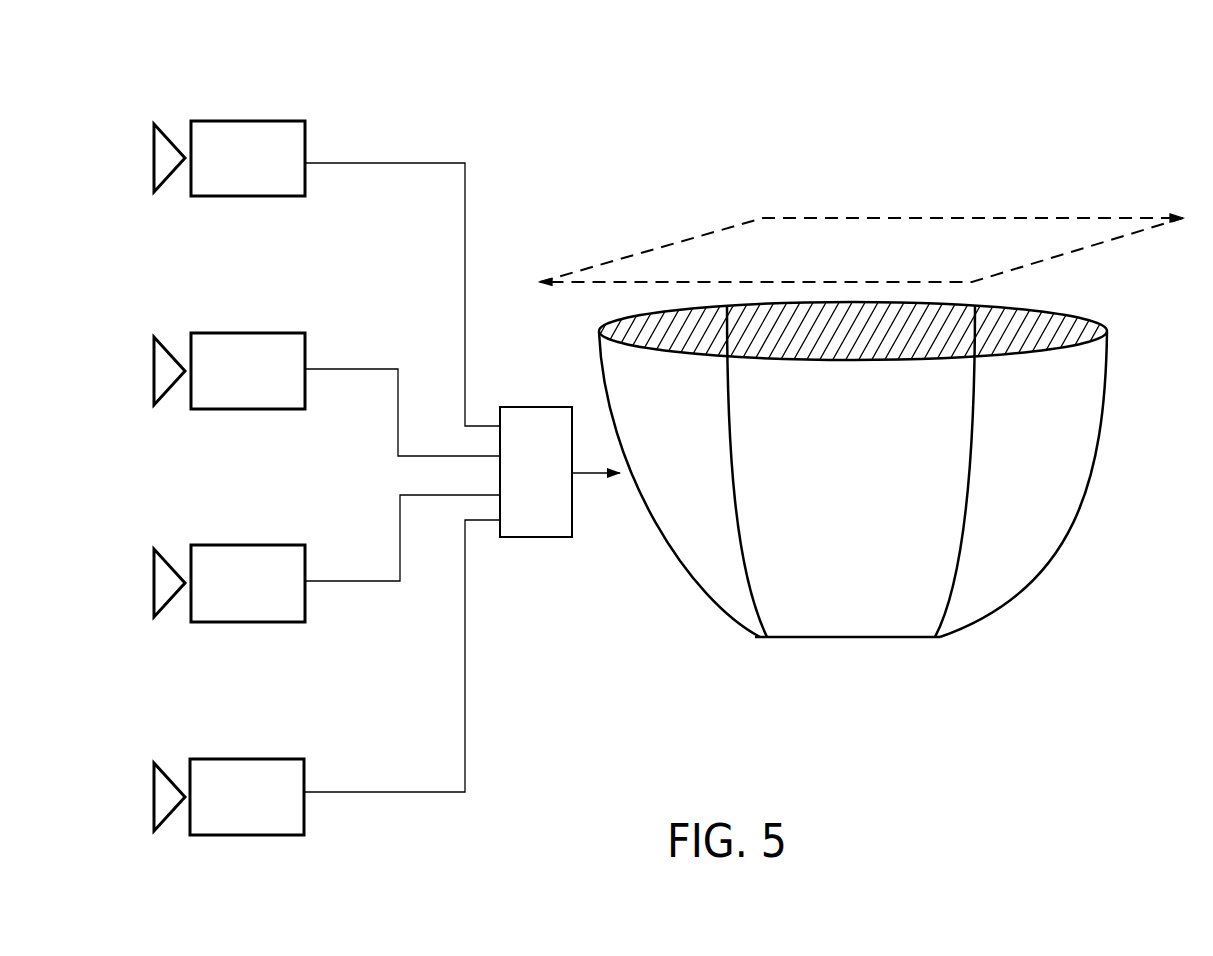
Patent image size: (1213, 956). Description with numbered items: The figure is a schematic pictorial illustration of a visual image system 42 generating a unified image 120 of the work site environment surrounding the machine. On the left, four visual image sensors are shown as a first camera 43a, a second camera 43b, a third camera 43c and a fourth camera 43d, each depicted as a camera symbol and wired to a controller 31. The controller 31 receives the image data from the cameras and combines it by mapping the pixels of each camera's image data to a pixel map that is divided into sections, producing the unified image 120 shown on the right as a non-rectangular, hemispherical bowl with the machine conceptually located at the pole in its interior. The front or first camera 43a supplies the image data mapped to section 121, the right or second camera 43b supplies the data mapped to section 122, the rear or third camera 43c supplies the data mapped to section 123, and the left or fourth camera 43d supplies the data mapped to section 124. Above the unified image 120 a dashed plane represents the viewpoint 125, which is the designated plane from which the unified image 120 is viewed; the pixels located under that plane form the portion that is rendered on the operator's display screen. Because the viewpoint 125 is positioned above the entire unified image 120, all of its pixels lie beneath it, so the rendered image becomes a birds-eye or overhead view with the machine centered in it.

The visual image system 42 is at (430, 118).
The first camera 43a is at (212, 121).
The second camera 43b is at (212, 333).
The third camera 43c is at (212, 545).
The fourth camera 43d is at (210, 759).
The controller 31 is at (548, 477).
The viewpoint 125 is at (807, 218).
The section 122 is at (915, 327).
The section 121 is at (694, 562).
The section 124 is at (813, 605).
The section 123 is at (1032, 525).
The unified image 120 is at (873, 637).